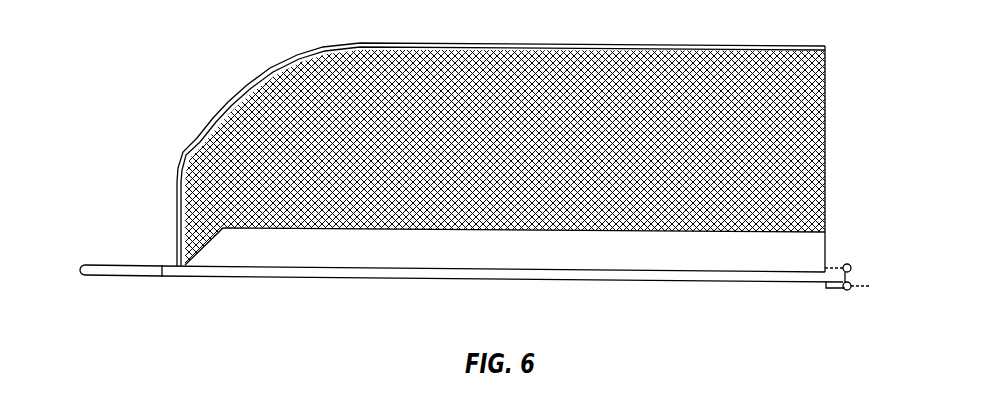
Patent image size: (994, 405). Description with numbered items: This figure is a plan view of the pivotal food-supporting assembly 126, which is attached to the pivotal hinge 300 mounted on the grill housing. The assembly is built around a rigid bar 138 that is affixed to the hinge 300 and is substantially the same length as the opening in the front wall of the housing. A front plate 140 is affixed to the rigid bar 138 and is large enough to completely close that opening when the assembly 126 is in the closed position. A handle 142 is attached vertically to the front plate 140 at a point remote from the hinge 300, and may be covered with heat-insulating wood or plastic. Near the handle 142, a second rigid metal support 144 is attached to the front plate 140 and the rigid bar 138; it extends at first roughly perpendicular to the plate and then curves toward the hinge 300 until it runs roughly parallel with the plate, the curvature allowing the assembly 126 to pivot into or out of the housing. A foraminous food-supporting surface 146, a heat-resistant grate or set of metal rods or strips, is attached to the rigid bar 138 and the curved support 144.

The food-supporting assembly 126 is at (150, 42).
The foraminous food-supporting surface 146 is at (793, 133).
The second rigid metal support 144 is at (177, 182).
The rigid bar 138 is at (805, 250).
The front plate 140 is at (322, 272).
The handle 142 is at (92, 270).
The pivotal hinge 300 is at (835, 285).